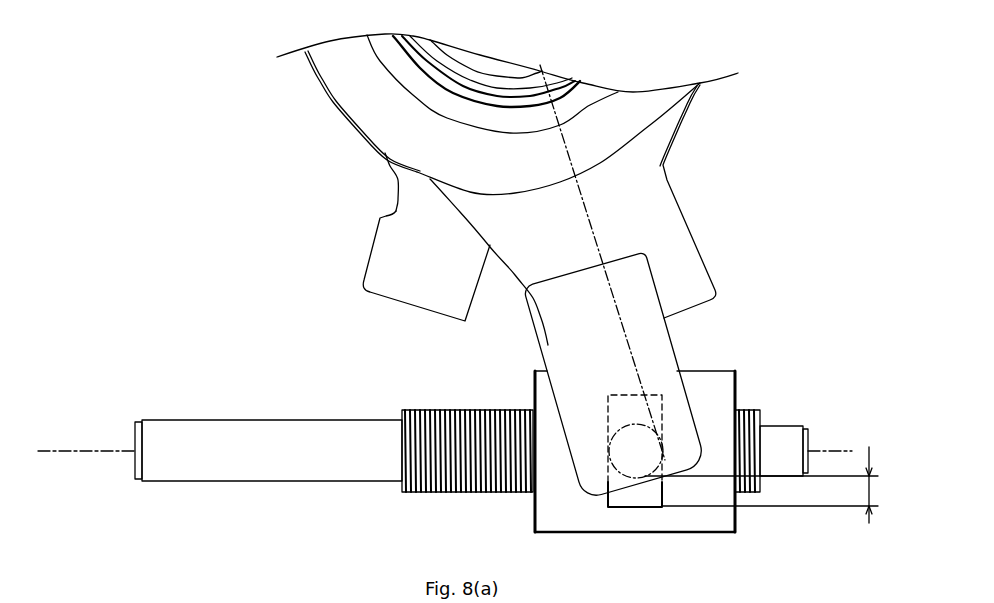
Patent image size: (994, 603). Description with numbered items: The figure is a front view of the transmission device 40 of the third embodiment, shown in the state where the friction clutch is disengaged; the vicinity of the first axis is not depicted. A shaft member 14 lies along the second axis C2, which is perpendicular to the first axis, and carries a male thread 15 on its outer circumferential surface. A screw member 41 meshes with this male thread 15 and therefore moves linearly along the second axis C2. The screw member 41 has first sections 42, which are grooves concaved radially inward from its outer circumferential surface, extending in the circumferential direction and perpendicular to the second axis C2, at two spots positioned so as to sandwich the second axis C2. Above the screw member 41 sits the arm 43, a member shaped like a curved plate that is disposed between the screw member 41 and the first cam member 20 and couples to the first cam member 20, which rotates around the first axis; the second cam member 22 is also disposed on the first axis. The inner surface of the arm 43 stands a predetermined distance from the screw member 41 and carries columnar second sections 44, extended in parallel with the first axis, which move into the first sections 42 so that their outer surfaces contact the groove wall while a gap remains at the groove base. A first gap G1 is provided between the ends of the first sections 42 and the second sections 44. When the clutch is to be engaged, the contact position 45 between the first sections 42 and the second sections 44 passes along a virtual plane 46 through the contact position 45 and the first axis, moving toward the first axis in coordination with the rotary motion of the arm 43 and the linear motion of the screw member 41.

The transmission device 40 is at (668, 287).
The first cam member 20 is at (362, 91).
The second cam member 22 is at (385, 260).
The virtual plane 46 is at (592, 230).
The arm 43 is at (562, 332).
The screw member 41 is at (722, 510).
The first sections 42 is at (657, 492).
The second sections 44 is at (573, 482).
The contact position 45 is at (687, 468).
The shaft member 14 is at (242, 433).
The male thread 15 is at (422, 405).
The second axis C2 is at (86, 450).
The first gap G1 is at (870, 492).